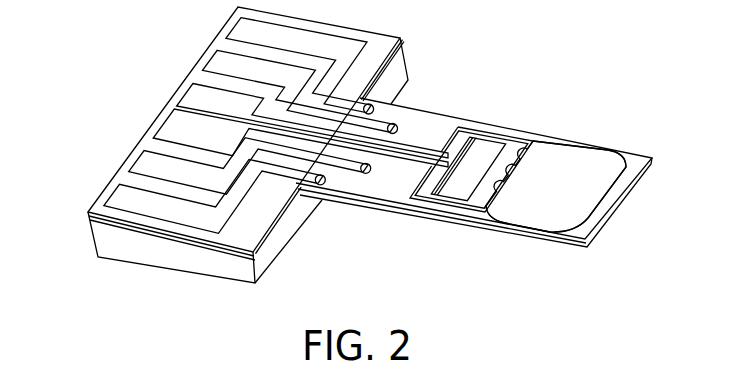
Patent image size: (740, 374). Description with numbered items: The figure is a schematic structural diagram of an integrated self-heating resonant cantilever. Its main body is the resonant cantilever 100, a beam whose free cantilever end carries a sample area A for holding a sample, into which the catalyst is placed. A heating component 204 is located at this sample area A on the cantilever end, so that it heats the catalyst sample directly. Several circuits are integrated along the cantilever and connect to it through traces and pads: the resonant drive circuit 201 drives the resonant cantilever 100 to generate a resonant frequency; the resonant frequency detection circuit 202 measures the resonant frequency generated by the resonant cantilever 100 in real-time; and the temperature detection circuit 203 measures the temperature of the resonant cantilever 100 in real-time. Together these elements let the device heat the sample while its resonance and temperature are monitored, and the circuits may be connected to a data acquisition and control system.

The resonant cantilever 100 is at (457, 68).
The resonant drive circuit 201 is at (246, 28).
The resonant frequency detection circuit 202 is at (232, 64).
The temperature detection circuit 203 is at (207, 100).
The heating component 204 is at (537, 138).
The sampling area A is at (597, 158).